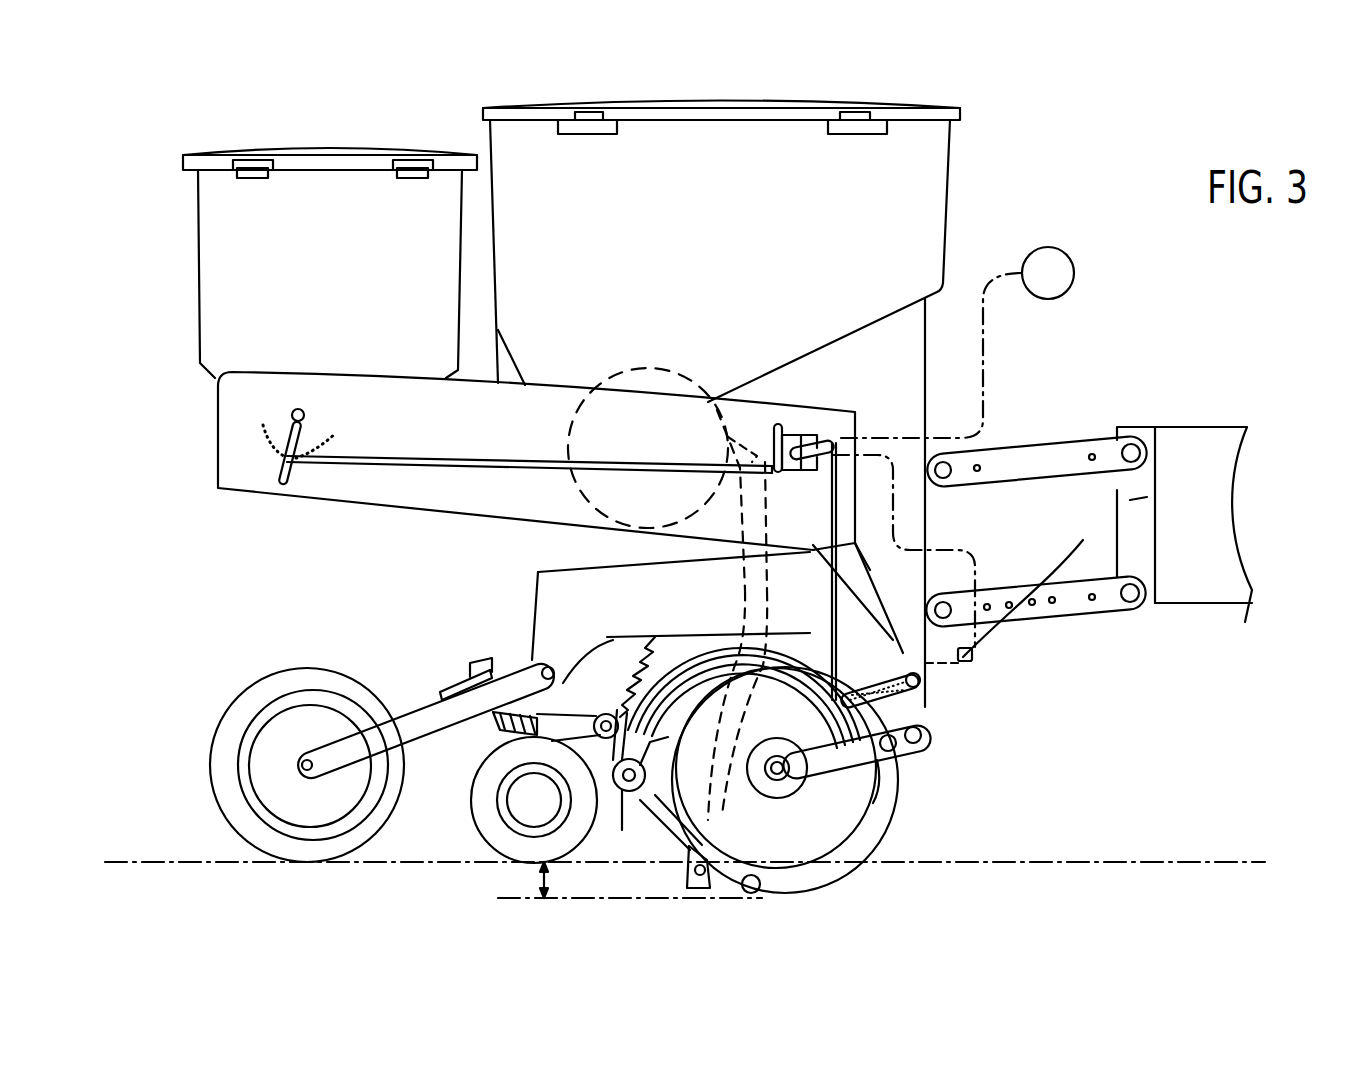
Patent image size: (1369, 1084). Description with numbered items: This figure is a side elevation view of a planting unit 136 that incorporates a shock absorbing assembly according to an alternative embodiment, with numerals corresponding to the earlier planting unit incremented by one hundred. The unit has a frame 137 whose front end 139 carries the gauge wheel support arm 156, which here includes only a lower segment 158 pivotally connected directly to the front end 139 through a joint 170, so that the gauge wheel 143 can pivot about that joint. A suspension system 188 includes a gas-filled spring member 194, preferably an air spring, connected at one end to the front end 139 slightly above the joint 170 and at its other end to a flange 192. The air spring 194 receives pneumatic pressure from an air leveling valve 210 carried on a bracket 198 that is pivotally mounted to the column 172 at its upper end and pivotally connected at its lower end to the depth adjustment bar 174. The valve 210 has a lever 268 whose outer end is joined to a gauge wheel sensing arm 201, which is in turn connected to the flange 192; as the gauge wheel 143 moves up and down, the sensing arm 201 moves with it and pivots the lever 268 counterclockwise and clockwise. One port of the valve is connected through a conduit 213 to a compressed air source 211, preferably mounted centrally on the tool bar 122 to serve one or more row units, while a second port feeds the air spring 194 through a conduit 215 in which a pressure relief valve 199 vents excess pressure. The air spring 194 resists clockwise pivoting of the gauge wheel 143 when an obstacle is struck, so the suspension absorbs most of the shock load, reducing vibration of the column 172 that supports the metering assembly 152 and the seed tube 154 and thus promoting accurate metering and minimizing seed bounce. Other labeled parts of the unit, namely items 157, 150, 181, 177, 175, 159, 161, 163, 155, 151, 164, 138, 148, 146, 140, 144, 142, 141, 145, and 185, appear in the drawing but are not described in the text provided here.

The planting unit 136 is at (1022, 72).
The second hopper 157 is at (345, 259).
The seed hopper 150 is at (705, 217).
The front end of frame 139 is at (902, 383).
The column 172 is at (490, 520).
The frame 137 is at (400, 516).
The depth adjustment bar 174 is at (398, 457).
The handle 181 is at (305, 412).
The lever arc 177 is at (256, 426).
The lever 175 is at (278, 467).
The metering assembly 152 is at (712, 335).
The seed tube 154 is at (742, 583).
The bracket 198 is at (775, 440).
The air leveling valve 210 is at (794, 425).
The lever 268 is at (822, 440).
The flange 192 is at (785, 640).
The compressed source of gas 211 is at (1075, 272).
The conduit 213 is at (984, 372).
The conduit 215 is at (977, 567).
The gauge wheel sensing arm 201 is at (858, 566).
The parallel linkage 159 is at (1051, 510).
The upper link 161 is at (1030, 445).
The lower link 163 is at (1052, 622).
The tool bar 122 is at (1190, 425).
The bracket 155 is at (1145, 497).
The pressure relief valve 199 is at (1039, 583).
The suspension system 188 is at (960, 668).
The housing 151 is at (620, 642).
The lower segment 158 is at (830, 737).
The gauge wheel support arm 156 is at (833, 773).
The wheel hub 164 is at (768, 798).
The gauge wheel 143 is at (873, 803).
The furrow opener 138 is at (935, 830).
The joint 170 is at (930, 731).
The gas-filled spring member 194 is at (938, 685).
The gauge wheel 148 is at (357, 853).
The closing wheel 146 is at (473, 838).
The arm 140 is at (683, 828).
The scraper 144 is at (707, 890).
The pivot 142 is at (752, 894).
The wheel edge 141 is at (830, 886).
The furrow depth line 145 is at (610, 902).
The ground surface 185 is at (1058, 870).